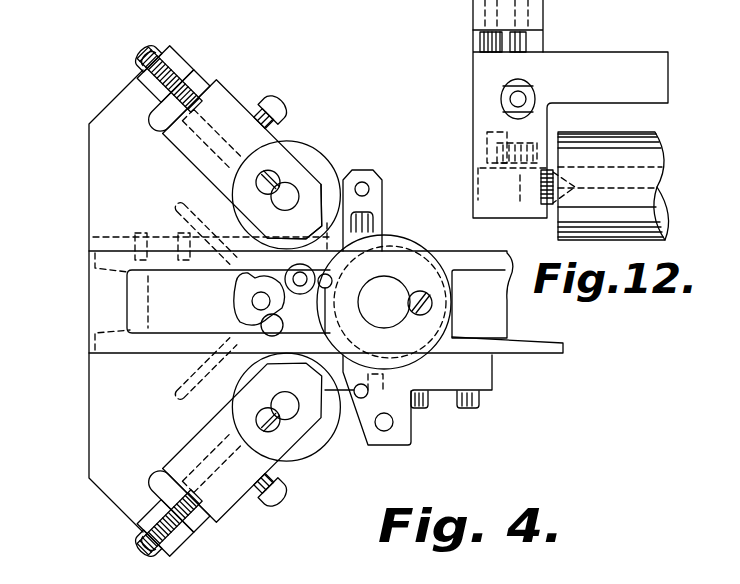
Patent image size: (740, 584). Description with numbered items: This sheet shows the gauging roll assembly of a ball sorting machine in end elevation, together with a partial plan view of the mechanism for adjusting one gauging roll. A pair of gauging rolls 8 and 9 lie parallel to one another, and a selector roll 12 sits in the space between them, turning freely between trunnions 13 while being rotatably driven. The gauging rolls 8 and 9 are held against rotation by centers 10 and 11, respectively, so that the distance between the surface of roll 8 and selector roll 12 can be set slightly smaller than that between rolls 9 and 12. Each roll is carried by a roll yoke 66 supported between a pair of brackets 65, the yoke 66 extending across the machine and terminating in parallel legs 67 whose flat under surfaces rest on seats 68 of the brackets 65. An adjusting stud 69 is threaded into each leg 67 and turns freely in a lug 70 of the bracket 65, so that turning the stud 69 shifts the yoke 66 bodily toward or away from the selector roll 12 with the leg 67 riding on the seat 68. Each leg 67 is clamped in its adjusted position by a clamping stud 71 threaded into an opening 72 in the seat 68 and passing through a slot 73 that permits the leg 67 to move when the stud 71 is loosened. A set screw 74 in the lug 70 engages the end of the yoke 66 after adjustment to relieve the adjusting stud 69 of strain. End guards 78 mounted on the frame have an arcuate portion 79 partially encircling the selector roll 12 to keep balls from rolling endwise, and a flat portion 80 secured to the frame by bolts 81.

In FIG. 4, the gauging roll 8 is at (323, 170).
In FIG. 12, the gauging roll 8 is at (623, 147).
In FIG. 4, the gauging roll 9 is at (313, 437).
In FIG. 4, the center 10 is at (266, 194).
In FIG. 12, the center 10 is at (518, 188).
In FIG. 4, the center 11 is at (277, 393).
In FIG. 4, the selector roll 12 is at (392, 245).
In FIG. 4, the trunnion 13 is at (385, 288).
In FIG. 4, the bracket 65 is at (100, 177).
In FIG. 4, the roll yoke 66 is at (222, 102).
In FIG. 12, the roll yoke 66 is at (605, 67).
In FIG. 4, the leg 67 is at (280, 160).
In FIG. 12, the leg 67 is at (488, 135).
In FIG. 4, the seat 68 is at (171, 137).
In FIG. 4, the adjusting stud 69 is at (145, 38).
In FIG. 4, the lug 70 is at (132, 100).
In FIG. 12, the lug 70 is at (533, 13).
In FIG. 4, the clamping stud 71 is at (290, 120).
In FIG. 12, the clamping stud 71 is at (532, 95).
In FIG. 4, the opening 72 is at (197, 208).
In FIG. 12, the slot 73 is at (511, 97).
In FIG. 4, the set screw 74 is at (148, 190).
In FIG. 12, the set screw 74 is at (482, 40).
In FIG. 4, the end guard 78 is at (370, 215).
In FIG. 4, the arcuate portion 79 is at (298, 303).
In FIG. 4, the flat portion 80 is at (110, 235).
In FIG. 4, the bolt 81 is at (147, 233).